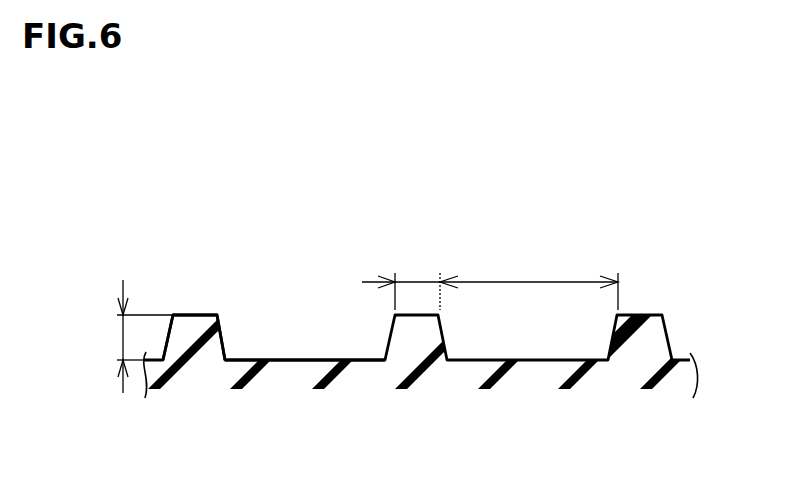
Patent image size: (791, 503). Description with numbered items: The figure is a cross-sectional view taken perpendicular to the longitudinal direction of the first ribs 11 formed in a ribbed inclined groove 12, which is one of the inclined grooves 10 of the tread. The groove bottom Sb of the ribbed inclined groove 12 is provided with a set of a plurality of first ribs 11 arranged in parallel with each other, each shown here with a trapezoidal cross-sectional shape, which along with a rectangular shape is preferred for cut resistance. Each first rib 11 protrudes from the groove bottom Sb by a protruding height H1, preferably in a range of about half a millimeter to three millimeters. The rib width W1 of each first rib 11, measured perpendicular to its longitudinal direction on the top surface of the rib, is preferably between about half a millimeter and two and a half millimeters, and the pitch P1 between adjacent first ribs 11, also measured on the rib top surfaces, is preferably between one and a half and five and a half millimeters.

The inclined grooves 10 is at (439, 296).
The ribbed inclined grooves 12 is at (315, 293).
The first ribs 11 is at (192, 330).
The groove bottoms Sb is at (282, 361).
The protruding height H1 is at (126, 336).
The rib width W1 is at (410, 280).
The pitch P1 is at (529, 280).